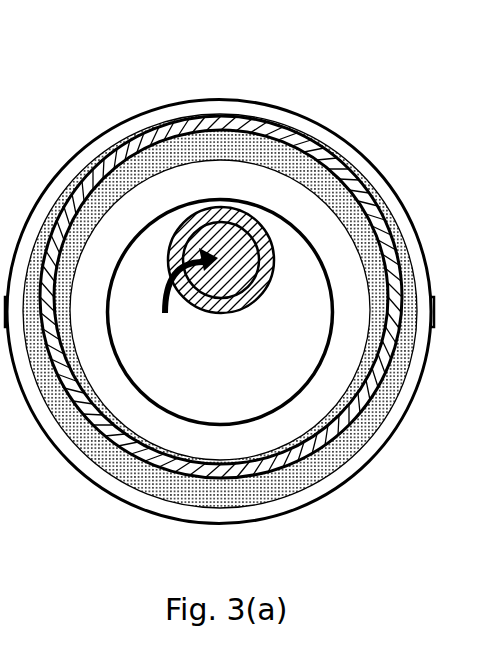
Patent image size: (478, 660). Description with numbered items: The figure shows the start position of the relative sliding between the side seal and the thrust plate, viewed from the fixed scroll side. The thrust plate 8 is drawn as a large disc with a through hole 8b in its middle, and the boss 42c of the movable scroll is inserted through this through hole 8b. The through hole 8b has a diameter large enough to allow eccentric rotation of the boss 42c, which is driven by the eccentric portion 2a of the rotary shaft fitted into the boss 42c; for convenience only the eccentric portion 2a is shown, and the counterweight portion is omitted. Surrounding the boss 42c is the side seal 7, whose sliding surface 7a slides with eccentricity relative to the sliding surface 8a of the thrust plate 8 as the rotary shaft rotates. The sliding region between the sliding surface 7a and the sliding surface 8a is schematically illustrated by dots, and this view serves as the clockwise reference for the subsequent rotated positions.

The thrust plate 8 is at (177, 93).
The sliding surface of the thrust plate 8a is at (217, 112).
The through hole 8b is at (130, 375).
The side seal 7 is at (279, 110).
The sliding surface of the side seal 7a is at (327, 152).
The eccentric portion 2a is at (206, 287).
The boss 42c is at (262, 278).